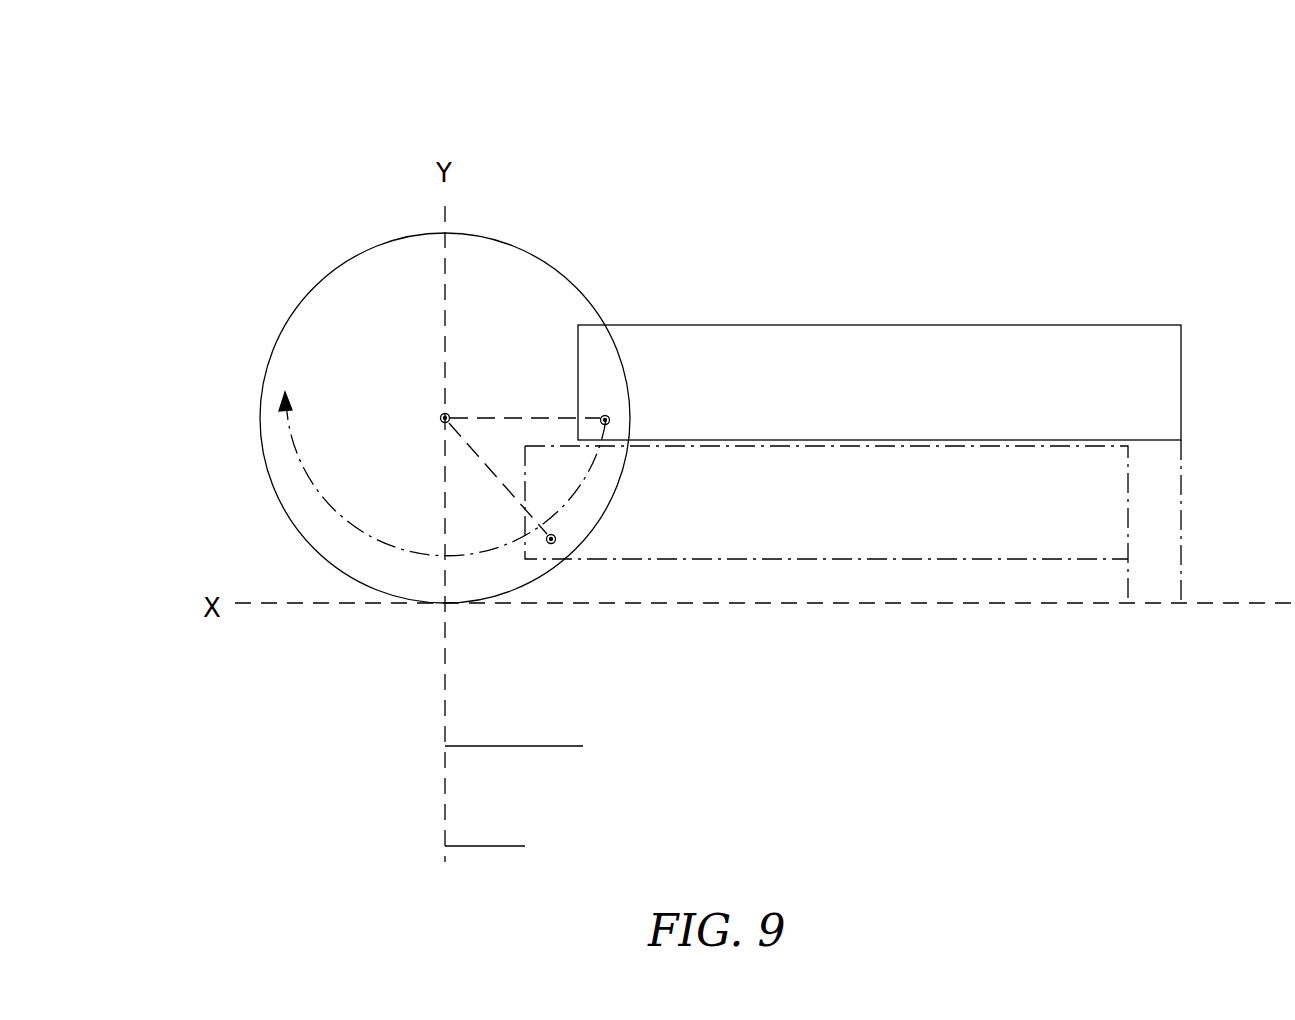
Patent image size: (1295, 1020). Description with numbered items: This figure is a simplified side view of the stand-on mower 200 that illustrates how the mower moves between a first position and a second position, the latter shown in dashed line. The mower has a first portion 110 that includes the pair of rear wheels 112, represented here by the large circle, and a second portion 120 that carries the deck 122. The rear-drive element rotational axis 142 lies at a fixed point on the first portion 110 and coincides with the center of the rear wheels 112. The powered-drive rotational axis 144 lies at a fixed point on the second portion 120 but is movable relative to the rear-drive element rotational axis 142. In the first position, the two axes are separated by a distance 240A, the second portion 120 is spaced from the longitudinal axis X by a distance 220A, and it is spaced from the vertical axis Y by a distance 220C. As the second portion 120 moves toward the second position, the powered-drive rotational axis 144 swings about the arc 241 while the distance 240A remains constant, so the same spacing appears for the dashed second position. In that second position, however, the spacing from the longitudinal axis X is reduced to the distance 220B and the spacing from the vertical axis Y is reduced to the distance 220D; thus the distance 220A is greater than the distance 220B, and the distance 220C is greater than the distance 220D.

The first portion 110 is at (362, 638).
The rear wheels 112 is at (391, 272).
The second portion 120 is at (888, 303).
The deck 122 is at (1093, 343).
The rear-drive element rotational axis 142 is at (440, 416).
The powered-drive rotational axis 144 is at (606, 415).
The mower 200 is at (807, 126).
The distance between second portion and longitudinal axis in first position 220A is at (1181, 462).
The distance between second portion and longitudinal axis in second position 220B is at (1127, 582).
The distance between second portion and vertical axis in first position 220C is at (547, 748).
The distance between second portion and vertical axis in second position 220D is at (516, 848).
The distance between rotational axes 240A is at (518, 416).
The arc 241 is at (310, 513).